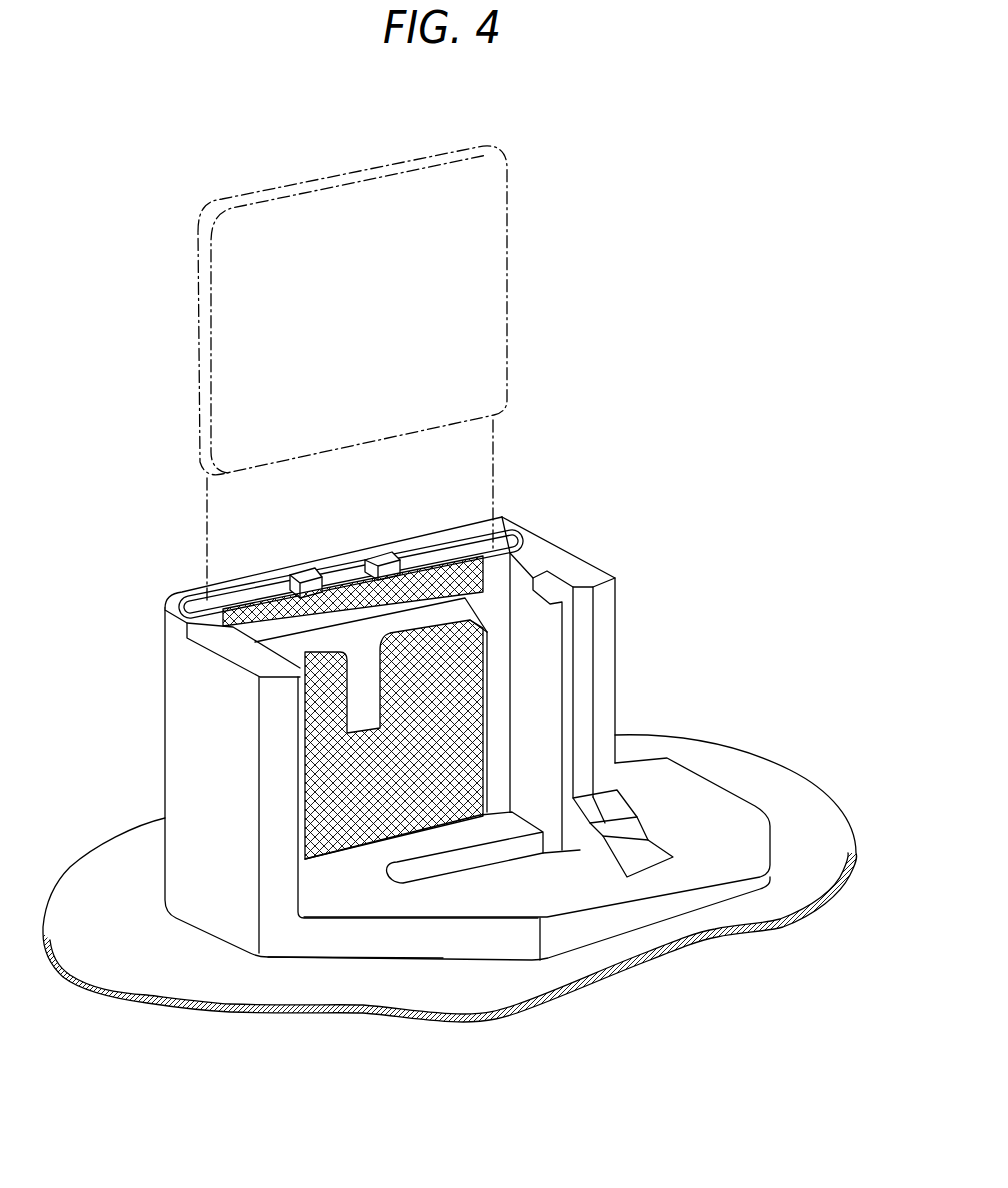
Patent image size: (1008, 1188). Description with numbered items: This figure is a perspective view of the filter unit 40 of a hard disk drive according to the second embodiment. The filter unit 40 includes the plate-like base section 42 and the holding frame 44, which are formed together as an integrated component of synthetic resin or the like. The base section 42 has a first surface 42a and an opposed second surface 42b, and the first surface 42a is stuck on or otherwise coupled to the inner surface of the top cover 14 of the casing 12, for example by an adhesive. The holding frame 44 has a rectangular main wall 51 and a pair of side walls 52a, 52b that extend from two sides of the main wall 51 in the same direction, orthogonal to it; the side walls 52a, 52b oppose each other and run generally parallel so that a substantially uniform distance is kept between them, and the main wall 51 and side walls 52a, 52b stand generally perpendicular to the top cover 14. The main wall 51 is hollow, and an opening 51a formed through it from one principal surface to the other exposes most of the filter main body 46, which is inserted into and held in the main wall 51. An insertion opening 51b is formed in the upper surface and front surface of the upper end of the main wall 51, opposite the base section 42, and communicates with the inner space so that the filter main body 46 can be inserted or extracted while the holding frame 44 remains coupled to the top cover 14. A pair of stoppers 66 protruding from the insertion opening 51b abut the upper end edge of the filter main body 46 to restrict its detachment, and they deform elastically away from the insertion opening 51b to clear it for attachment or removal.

The filter unit 40 is at (133, 548).
The filter main body 46 is at (497, 272).
The holding frame 44 is at (393, 715).
The base section 42 is at (531, 852).
The first surface 42a is at (680, 905).
The second surface 42b is at (733, 805).
The main wall 51 is at (427, 695).
The opening 51a is at (480, 690).
The insertion opening 51b is at (262, 585).
The side wall 52a is at (578, 574).
The side wall 52b is at (190, 757).
The stoppers 66 is at (303, 572).
The top cover 14 is at (750, 910).
The casing 12 is at (468, 878).